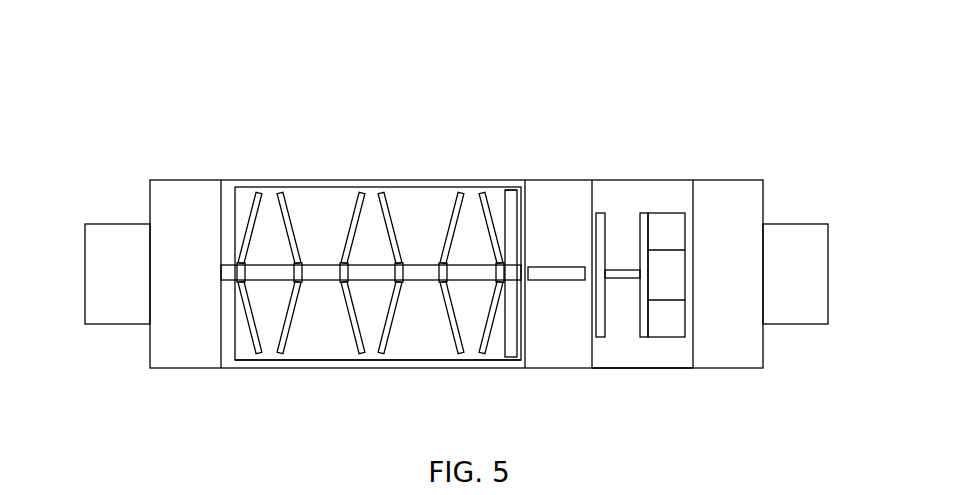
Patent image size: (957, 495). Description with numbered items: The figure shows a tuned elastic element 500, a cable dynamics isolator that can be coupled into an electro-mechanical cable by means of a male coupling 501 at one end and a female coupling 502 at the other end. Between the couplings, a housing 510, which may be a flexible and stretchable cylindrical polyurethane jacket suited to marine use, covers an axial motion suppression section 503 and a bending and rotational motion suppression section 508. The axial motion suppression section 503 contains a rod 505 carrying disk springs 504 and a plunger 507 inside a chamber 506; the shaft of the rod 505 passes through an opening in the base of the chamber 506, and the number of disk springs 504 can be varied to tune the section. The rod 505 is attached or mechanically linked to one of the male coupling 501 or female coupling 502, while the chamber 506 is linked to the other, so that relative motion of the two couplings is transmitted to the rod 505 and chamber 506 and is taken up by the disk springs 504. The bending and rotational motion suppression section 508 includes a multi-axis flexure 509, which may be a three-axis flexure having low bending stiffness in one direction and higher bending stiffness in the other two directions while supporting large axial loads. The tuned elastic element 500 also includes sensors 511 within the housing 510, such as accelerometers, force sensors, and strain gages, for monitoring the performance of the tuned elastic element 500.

The tuned elastic element 500 is at (91, 92).
The male coupling 501 is at (83, 228).
The female coupling 502 is at (830, 230).
The axial motion suppression section 503 is at (268, 368).
The disk springs 504 is at (483, 192).
The rod 505 is at (425, 282).
The chamber 506 is at (473, 362).
The plunger 507 is at (513, 360).
The bending and rotational motion suppression section 508 is at (640, 368).
The multi-axis flexure 509 is at (643, 213).
The housing 510 is at (503, 188).
The sensors 511 is at (557, 282).